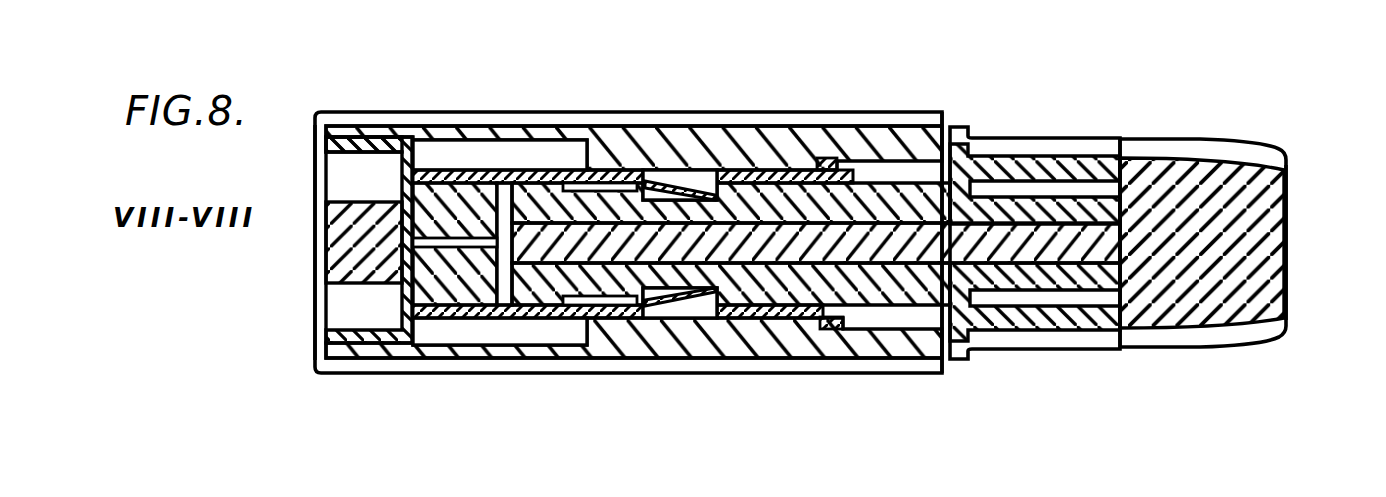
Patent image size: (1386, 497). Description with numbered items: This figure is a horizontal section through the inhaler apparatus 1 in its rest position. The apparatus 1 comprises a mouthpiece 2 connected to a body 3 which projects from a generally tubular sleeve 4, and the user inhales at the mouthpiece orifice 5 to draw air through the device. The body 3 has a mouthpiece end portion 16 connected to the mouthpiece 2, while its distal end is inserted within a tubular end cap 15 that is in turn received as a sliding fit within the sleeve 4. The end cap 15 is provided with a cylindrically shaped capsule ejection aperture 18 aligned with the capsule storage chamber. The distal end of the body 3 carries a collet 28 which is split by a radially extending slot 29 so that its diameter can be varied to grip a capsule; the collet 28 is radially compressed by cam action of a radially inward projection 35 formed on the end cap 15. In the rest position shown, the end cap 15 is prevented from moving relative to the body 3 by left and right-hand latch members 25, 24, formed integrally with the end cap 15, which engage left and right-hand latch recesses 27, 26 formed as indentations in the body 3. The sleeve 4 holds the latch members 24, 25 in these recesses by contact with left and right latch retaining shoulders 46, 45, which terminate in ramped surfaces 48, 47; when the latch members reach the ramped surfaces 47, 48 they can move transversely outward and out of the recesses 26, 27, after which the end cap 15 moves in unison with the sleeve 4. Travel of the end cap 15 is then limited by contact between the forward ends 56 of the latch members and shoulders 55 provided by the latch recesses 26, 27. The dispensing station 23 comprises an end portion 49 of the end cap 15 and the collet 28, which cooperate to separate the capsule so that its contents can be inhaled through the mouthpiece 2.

The apparatus 1 is at (245, 173).
The mouthpiece 2 is at (1177, 143).
The body 3 is at (1010, 138).
The sleeve 4 is at (827, 116).
The mouthpiece orifice 5 is at (1287, 228).
The end cap 15 is at (537, 170).
The mouthpiece end portion 16 is at (1045, 157).
The capsule ejection aperture 18 is at (288, 247).
The dispensing station 23 is at (381, 98).
The right-hand latch member 24 is at (660, 305).
The left-hand latch member 25 is at (670, 172).
The right-hand latch recess 26 is at (709, 318).
The left-hand latch recess 27 is at (698, 170).
The collet 28 is at (463, 270).
The slot 29 is at (440, 247).
The radially inward projection 35 is at (464, 170).
The right latch retaining shoulder 45 is at (768, 338).
The left latch retaining shoulder 46 is at (750, 157).
The ramped surface 47 is at (857, 330).
The ramped surface 48 is at (857, 160).
The end portion 49 is at (373, 127).
The shoulders 55 is at (583, 308).
The forward ends 56 is at (633, 300).